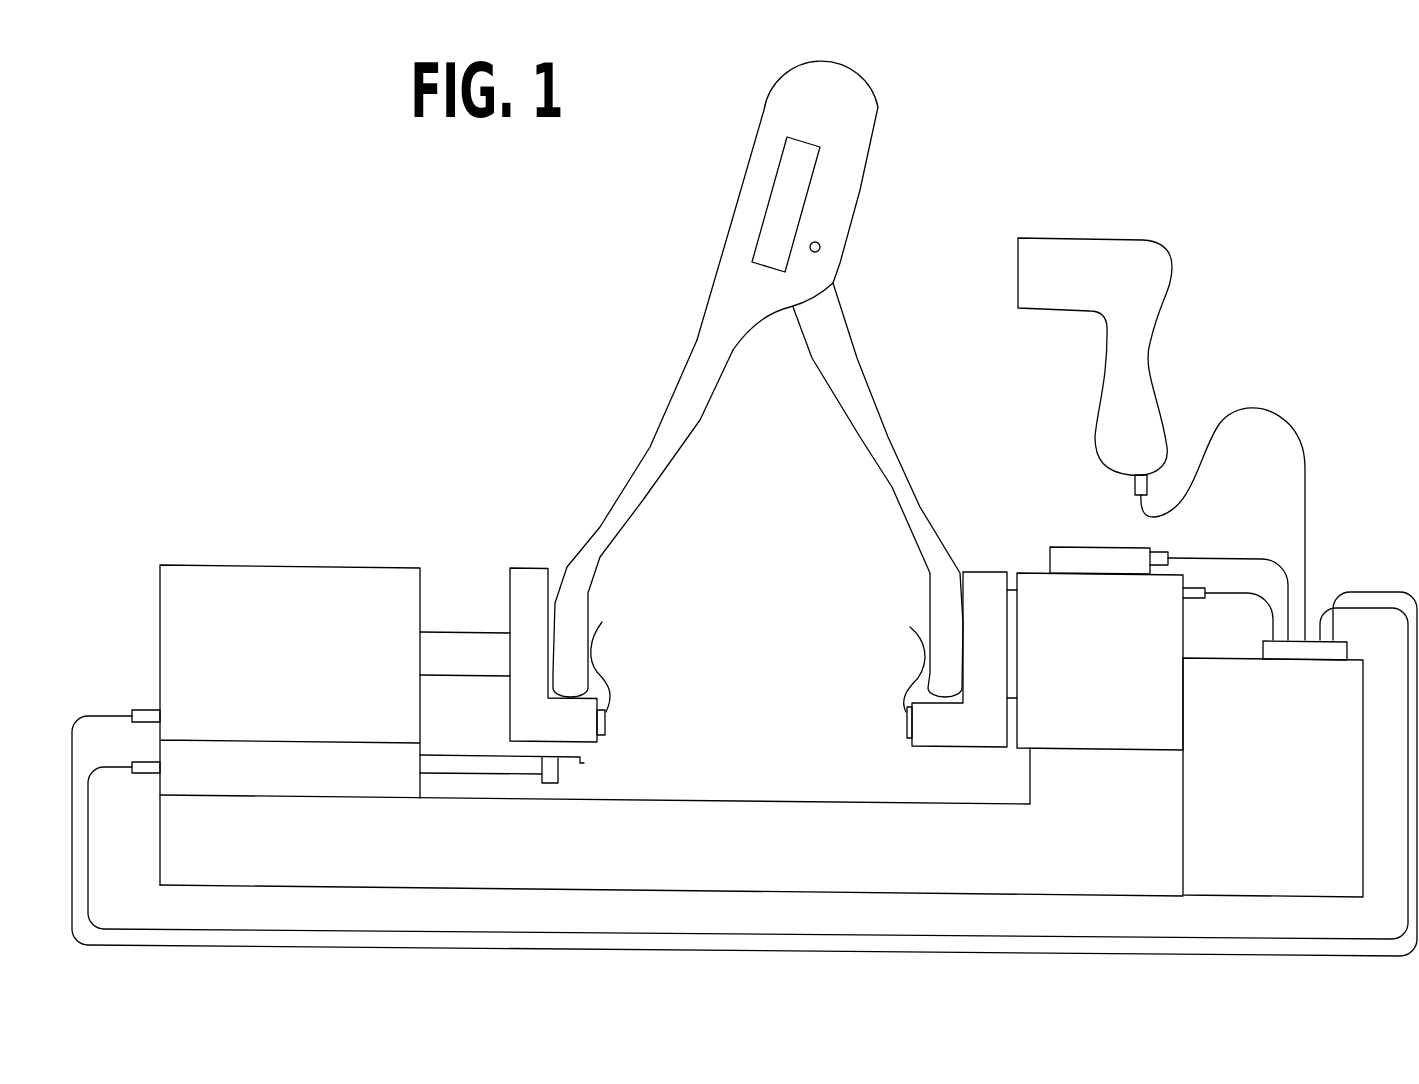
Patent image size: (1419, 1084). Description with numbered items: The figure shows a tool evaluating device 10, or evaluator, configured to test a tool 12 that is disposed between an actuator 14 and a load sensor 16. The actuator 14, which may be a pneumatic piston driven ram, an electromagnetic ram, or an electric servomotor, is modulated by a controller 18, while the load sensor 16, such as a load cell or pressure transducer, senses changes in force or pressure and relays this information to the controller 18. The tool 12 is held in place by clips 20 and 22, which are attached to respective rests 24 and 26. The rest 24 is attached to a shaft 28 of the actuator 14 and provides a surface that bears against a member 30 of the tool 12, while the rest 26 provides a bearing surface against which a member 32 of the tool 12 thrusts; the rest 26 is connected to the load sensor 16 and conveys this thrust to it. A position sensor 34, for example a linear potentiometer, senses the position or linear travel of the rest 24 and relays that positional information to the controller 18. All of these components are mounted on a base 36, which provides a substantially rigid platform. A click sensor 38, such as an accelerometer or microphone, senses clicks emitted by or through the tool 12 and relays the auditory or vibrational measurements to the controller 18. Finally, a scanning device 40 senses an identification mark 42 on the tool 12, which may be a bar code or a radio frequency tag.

The tool evaluating device 10 is at (1042, 95).
The tool 12 is at (763, 118).
The actuator 14 is at (215, 565).
The load sensor 16 is at (1037, 570).
The controller 18 is at (1287, 900).
The clip 20 is at (600, 667).
The clip 22 is at (910, 643).
The rest 24 is at (592, 745).
The rest 26 is at (957, 750).
The shaft 28 is at (443, 632).
The member 30 is at (610, 470).
The member 32 is at (900, 440).
The position sensor 34 is at (160, 785).
The base 36 is at (782, 798).
The click sensor 38 is at (1100, 547).
The scanning device 40 is at (1160, 243).
The identification mark 42 is at (917, 203).